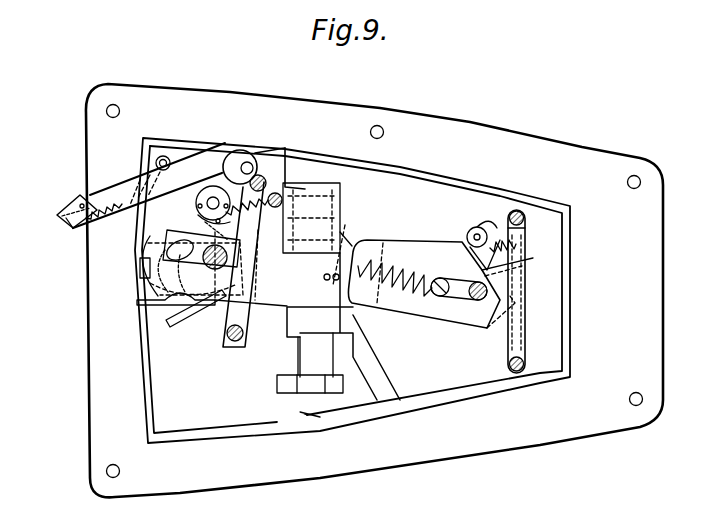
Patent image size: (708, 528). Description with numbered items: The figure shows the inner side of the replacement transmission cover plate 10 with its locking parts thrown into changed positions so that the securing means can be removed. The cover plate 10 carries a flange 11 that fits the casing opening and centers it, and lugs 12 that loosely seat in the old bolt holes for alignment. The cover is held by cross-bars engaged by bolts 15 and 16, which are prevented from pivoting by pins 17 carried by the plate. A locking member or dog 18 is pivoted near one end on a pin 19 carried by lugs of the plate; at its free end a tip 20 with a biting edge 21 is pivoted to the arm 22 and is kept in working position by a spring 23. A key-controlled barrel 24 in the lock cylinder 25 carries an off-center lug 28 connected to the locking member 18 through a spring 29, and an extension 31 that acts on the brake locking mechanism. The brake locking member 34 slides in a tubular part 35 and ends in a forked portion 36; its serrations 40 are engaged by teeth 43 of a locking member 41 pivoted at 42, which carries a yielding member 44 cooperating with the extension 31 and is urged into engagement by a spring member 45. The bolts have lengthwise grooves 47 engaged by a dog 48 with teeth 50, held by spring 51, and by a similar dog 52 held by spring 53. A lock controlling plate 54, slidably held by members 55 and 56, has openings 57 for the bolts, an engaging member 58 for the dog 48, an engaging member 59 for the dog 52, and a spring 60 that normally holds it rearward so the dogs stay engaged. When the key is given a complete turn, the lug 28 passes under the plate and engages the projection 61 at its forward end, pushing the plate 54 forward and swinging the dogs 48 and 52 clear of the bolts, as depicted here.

The cover plate 10 is at (577, 152).
The flange 11 is at (566, 354).
The lugs 12 is at (372, 129).
The bolt 15 is at (484, 302).
The bolt 16 is at (228, 305).
The pins 17 is at (212, 196).
The locking member 18 is at (180, 162).
The pin 19 is at (249, 163).
The tip 20 is at (60, 212).
The tab edge 21 is at (65, 222).
The arm 22 is at (80, 200).
The spring 23 is at (108, 208).
The barrel 24 is at (142, 290).
The lock cylinder 25 is at (146, 251).
The lug 28 is at (142, 277).
The spring 29 is at (153, 190).
The extension 31 is at (140, 265).
The brake locking member 34 is at (297, 351).
The tubular part 35 is at (344, 218).
The forked portion 36 is at (277, 384).
The serrations 40 is at (346, 240).
The locking member 41 is at (262, 303).
The pivot 42 is at (208, 306).
The teeth 43 is at (311, 229).
The yielding member 44 is at (136, 303).
The spring member 45 is at (311, 220).
The grooves 47 is at (488, 291).
The dog 48 is at (468, 230).
The teeth 50 is at (442, 256).
The spring 51 is at (483, 224).
The dog 52 is at (203, 214).
The spring 53 is at (214, 197).
The lock controlling member 54 is at (408, 245).
The member 55 is at (262, 176).
The member 56 is at (526, 240).
The openings 57 is at (208, 270).
The engaging member 58 is at (522, 266).
The engaging member 59 is at (204, 223).
The spring 60 is at (388, 250).
The engaging member 61 is at (142, 258).